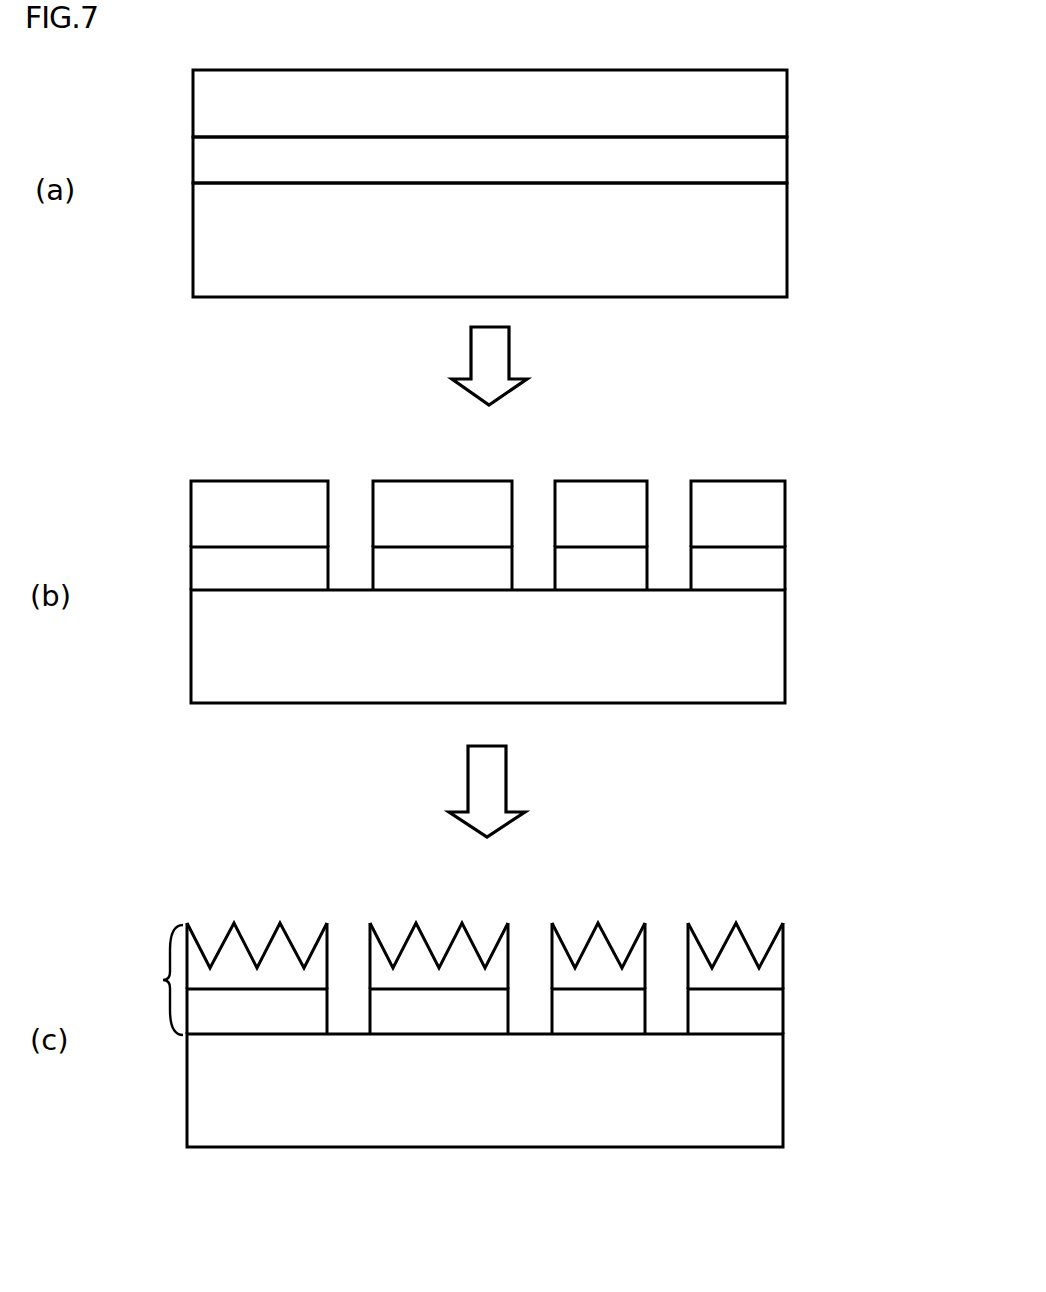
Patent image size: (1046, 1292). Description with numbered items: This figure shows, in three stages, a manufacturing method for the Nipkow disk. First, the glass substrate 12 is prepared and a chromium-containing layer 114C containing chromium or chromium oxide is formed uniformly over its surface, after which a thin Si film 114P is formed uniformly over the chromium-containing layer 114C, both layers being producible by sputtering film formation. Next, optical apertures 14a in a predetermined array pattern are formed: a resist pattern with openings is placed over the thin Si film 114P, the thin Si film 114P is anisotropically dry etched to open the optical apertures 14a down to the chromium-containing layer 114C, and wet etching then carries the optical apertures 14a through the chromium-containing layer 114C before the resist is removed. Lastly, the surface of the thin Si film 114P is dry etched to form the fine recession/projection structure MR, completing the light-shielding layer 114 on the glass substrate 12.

The glass substrate 12 is at (522, 665).
The chromium-containing layer 114C is at (541, 585).
The thin Si film 114P is at (545, 529).
The light-shielding layer 114 is at (146, 980).
The optical apertures 14a is at (502, 688).
The fine recession/projection structure MR is at (477, 910).